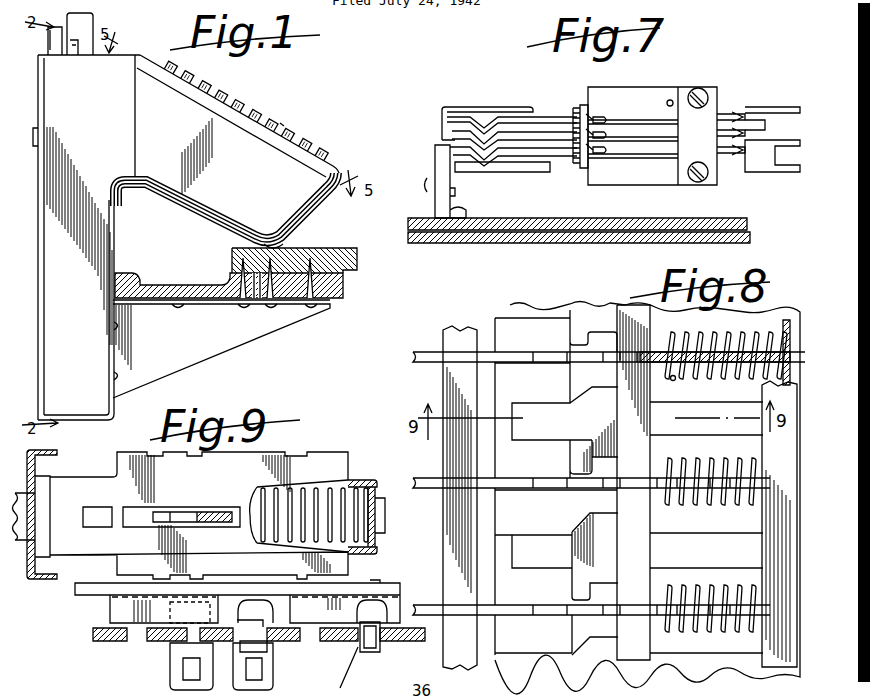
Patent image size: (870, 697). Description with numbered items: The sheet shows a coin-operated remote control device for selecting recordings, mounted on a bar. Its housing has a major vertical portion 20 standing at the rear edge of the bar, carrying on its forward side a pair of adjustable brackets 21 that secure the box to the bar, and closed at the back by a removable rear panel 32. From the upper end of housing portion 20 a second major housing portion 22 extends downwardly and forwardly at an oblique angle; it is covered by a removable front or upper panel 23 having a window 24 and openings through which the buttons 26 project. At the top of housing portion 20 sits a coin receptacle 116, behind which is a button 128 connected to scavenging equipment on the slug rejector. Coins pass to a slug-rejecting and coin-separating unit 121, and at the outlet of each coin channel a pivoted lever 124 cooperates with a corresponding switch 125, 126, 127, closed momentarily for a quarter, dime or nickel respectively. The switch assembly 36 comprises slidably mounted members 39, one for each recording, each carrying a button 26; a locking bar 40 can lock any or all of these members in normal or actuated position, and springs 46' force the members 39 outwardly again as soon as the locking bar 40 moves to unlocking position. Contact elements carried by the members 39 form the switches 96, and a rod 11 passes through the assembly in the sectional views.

In FIG. 1, the major vertical housing portion 20 is at (97, 244).
In FIG. 7, the major vertical housing portion 20 is at (520, 243).
In FIG. 1, the adjustable brackets 21 is at (223, 343).
In FIG. 1, the second major housing portion 22 is at (205, 203).
In FIG. 1, the removable front or upper panel 23 is at (243, 120).
In FIG. 1, the window 24 is at (280, 123).
In FIG. 1, the buttons 26 is at (210, 80).
In FIG. 1, the removable rear panel 32 is at (32, 287).
In FIG. 1, the coin receptacle 116 is at (93, 17).
In FIG. 1, the button 128 is at (50, 58).
In FIG. 7, the slug-rejecting and coin-separating unit 121 is at (482, 107).
In FIG. 7, the pivoted lever 124 is at (548, 150).
In FIG. 7, the quarter switch 125 is at (617, 117).
In FIG. 7, the dime switch 126 is at (630, 133).
In FIG. 7, the nickel switch 127 is at (630, 152).
In FIG. 8, the longitudinal switch assembly 36 is at (533, 330).
In FIG. 9, the longitudinal switch assembly 36 is at (106, 470).
In FIG. 8, the slidably mounted members 39 is at (547, 447).
In FIG. 9, the slidably mounted members 39 is at (96, 588).
In FIG. 8, the locking bar 40 is at (603, 317).
In FIG. 9, the locking bar 40 is at (207, 512).
In FIG. 8, the springs 46' is at (723, 480).
In FIG. 9, the springs 46' is at (317, 493).
In FIG. 8, the rod 11 is at (609, 524).
In FIG. 9, the switch 96 is at (397, 605).